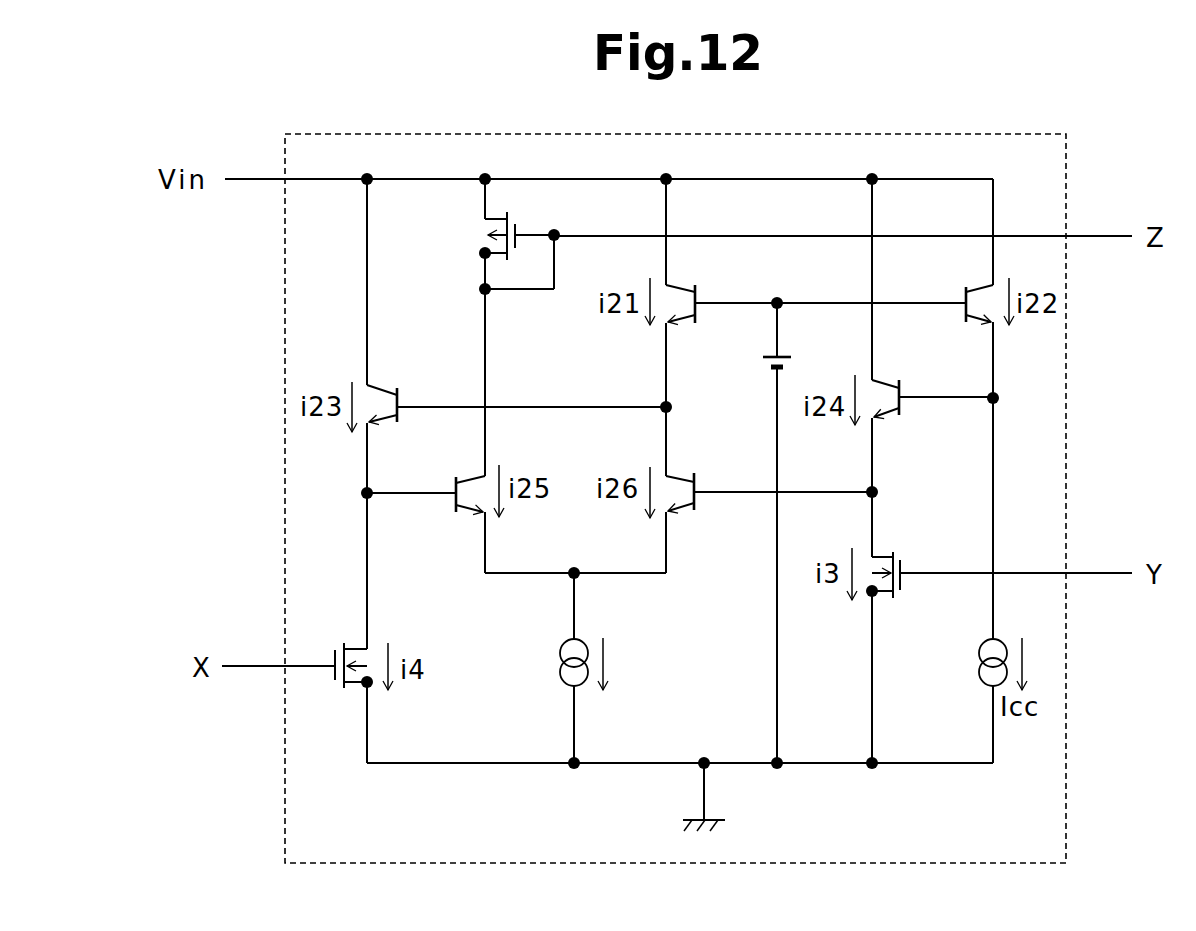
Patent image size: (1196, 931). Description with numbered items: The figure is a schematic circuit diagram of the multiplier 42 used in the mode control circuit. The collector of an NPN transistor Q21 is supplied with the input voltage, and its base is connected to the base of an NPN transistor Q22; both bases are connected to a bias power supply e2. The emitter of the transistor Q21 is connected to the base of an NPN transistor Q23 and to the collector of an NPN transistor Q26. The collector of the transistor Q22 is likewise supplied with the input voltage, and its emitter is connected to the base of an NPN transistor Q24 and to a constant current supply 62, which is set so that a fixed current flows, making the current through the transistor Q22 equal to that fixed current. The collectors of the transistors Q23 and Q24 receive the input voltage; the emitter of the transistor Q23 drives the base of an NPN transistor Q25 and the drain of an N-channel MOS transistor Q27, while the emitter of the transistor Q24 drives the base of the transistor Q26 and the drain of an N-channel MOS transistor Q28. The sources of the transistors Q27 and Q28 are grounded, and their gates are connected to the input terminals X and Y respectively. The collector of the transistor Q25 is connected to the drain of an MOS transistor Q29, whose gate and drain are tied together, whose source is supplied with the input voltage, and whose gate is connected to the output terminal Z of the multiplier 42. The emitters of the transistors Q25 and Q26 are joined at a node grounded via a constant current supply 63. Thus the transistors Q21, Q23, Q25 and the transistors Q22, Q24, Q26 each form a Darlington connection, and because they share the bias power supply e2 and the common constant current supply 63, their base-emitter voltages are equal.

The multiplier 42 is at (1066, 160).
The constant current supply 62 is at (980, 650).
The constant current supply 63 is at (560, 650).
The NPN transistor Q21 is at (696, 292).
The NPN transistor Q22 is at (964, 290).
The NPN transistor Q23 is at (398, 395).
The NPN transistor Q24 is at (900, 388).
The NPN transistor Q25 is at (454, 484).
The NPN transistor Q26 is at (695, 482).
The N-channel MOS transistor Q27 is at (334, 683).
The N-channel MOS transistor Q28 is at (901, 568).
The MOS transistor Q29 is at (516, 232).
The bias power supply e2 is at (768, 366).